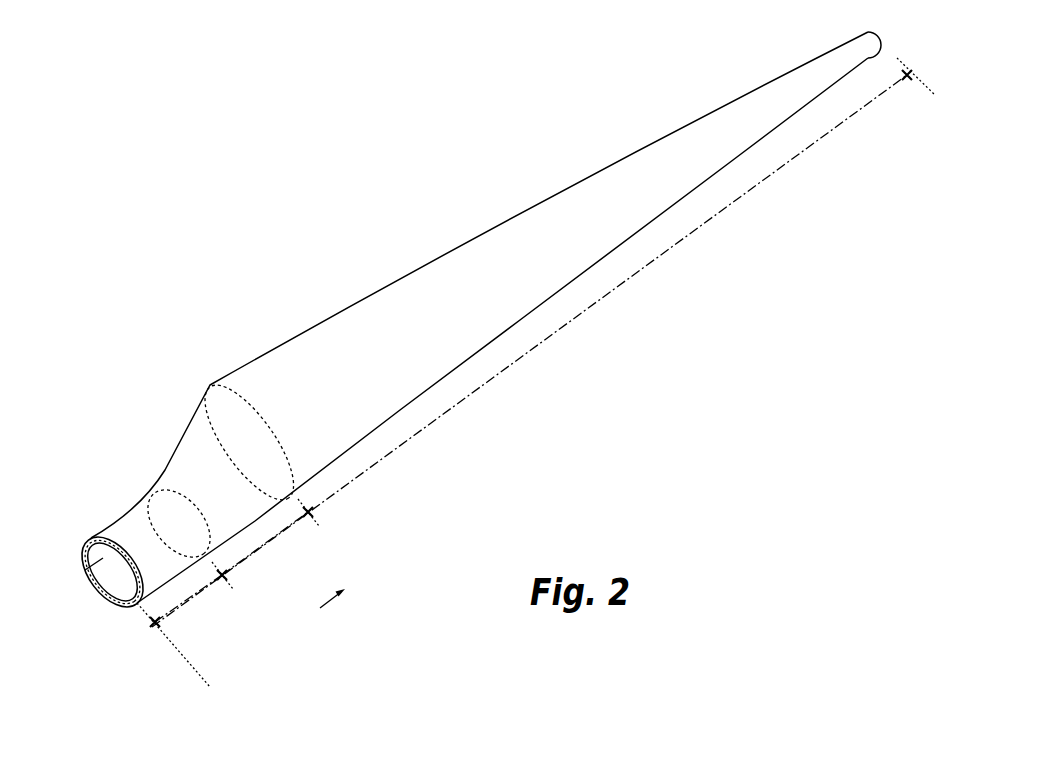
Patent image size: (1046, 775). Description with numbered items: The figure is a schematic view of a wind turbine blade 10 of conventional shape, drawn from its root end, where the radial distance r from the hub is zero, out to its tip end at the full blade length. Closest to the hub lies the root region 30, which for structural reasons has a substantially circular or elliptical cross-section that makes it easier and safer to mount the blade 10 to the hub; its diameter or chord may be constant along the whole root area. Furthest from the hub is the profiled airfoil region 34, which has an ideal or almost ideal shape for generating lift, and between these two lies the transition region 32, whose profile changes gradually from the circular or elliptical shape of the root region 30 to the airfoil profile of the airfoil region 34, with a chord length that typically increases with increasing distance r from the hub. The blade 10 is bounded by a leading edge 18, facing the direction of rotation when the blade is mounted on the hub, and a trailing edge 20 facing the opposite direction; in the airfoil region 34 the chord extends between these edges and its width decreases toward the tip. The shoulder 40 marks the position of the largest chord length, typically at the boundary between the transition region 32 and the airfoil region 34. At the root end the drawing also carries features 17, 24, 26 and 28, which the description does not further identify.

The wind turbine blade 10 is at (335, 213).
The root end 17 is at (85, 570).
The leading edge 18 is at (636, 233).
The trailing edge 20 is at (527, 210).
The root section 24 is at (105, 532).
The inner ring 26 is at (108, 604).
The root flange ring 28 is at (97, 538).
The root region 30 is at (188, 599).
The transition region 32 is at (268, 540).
The airfoil region 34 is at (550, 335).
The shoulder 40 is at (210, 385).